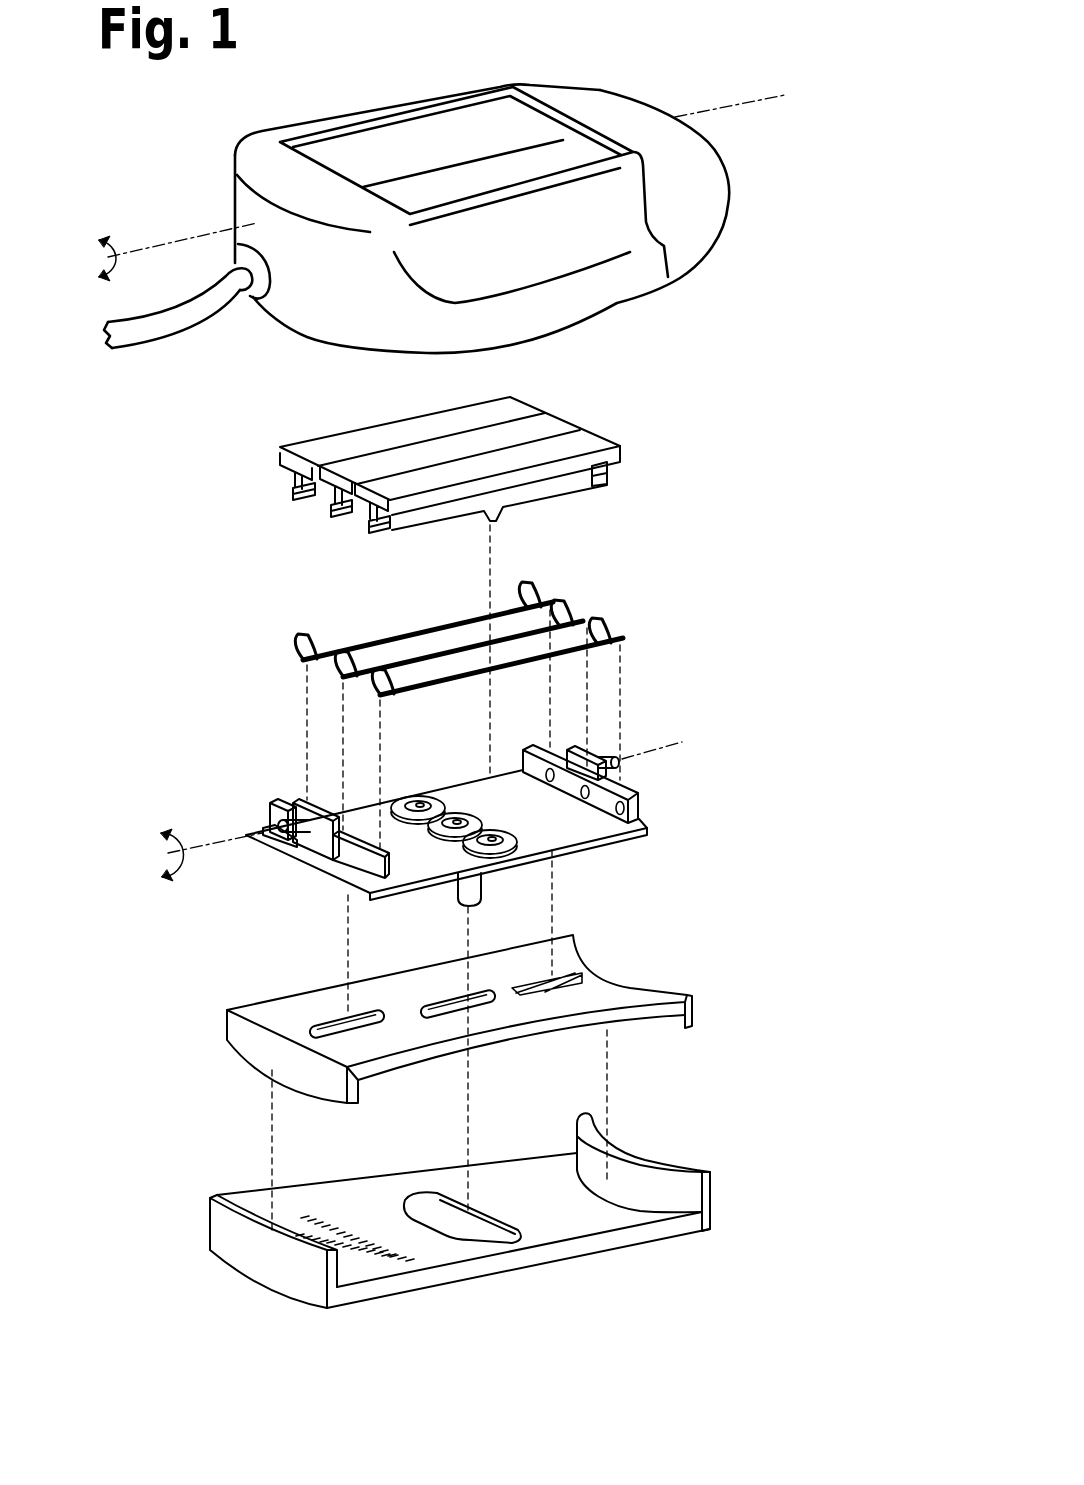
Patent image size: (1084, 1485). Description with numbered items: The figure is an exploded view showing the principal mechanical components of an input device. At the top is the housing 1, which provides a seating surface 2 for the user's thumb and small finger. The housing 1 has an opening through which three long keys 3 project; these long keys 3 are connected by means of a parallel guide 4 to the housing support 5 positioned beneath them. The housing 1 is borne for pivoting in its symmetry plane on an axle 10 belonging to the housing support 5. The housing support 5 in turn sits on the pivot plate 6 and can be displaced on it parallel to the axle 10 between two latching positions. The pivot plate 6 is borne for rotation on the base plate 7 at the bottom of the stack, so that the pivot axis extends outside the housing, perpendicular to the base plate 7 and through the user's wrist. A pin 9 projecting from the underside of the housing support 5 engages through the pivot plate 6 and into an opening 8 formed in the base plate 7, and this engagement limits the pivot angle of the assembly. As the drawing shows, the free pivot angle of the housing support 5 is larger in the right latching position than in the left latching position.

The housing 1 is at (697, 188).
The seating surface 2 is at (560, 258).
The long keys 3 is at (325, 500).
The parallel guide 4 is at (533, 585).
The housing support 5 is at (650, 828).
The pivot plate 6 is at (692, 1002).
The base plate 7 is at (713, 1190).
The opening 8 is at (520, 1225).
The pin 9 is at (472, 882).
The axle 10 is at (303, 827).